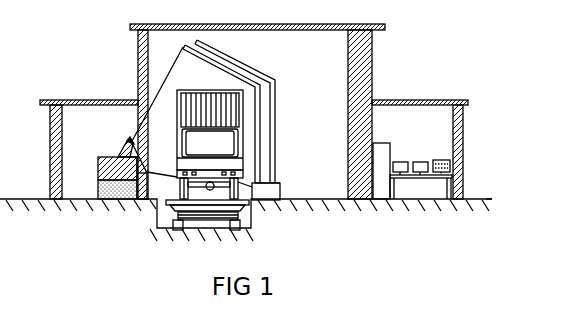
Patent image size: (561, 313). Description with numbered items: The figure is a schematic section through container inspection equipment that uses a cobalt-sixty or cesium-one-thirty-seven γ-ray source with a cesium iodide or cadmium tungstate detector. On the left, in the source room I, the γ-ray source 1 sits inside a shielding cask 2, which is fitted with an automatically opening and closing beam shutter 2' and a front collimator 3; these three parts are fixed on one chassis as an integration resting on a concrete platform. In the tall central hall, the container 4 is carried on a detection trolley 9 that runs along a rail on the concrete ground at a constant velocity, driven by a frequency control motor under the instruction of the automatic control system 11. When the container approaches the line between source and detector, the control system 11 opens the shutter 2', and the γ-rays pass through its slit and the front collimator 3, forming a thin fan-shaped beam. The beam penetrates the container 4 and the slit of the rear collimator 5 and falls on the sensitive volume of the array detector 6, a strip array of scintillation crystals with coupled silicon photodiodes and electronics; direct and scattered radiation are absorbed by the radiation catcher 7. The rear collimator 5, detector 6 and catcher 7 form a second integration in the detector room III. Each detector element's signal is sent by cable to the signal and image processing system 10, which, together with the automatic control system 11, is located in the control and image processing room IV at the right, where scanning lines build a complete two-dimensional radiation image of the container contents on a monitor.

The γ-ray source 1 is at (89, 149).
The cask 2 is at (111, 171).
The beam shutter 2' is at (107, 146).
The front collimator 3 is at (128, 142).
The container 4 is at (199, 136).
The rear collimator 5 is at (208, 62).
The cesium iodide or cadmium tungstate array detector 6 is at (228, 62).
The radiation catcher 7 is at (277, 113).
The detection trolley 9 is at (247, 209).
The signal and image processing system 10 is at (381, 162).
The automatic control system 11 is at (442, 161).
The source room I is at (257, 111).
The detector room III is at (335, 114).
The control and image processing room IV is at (420, 149).